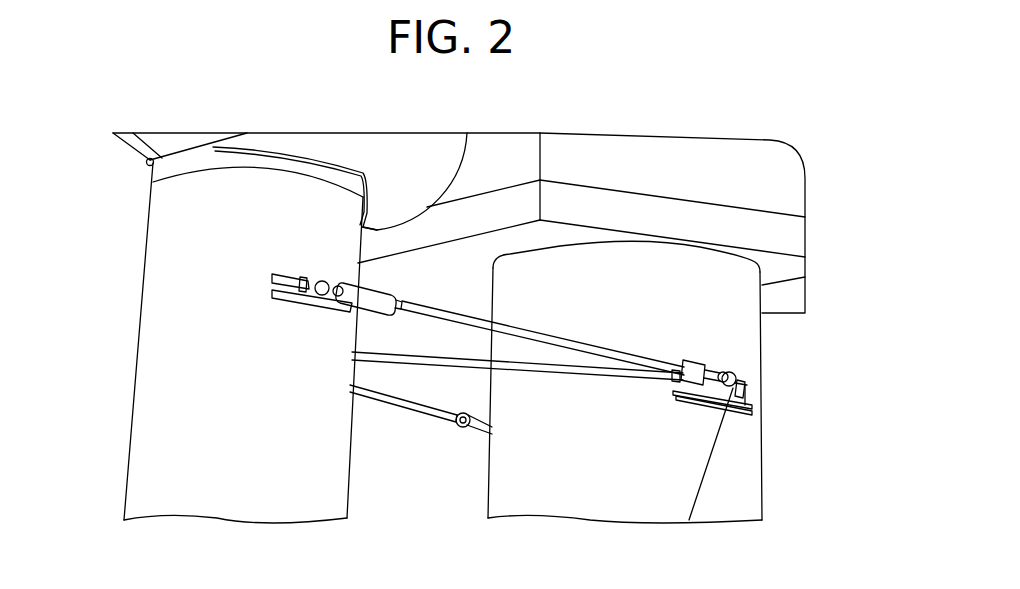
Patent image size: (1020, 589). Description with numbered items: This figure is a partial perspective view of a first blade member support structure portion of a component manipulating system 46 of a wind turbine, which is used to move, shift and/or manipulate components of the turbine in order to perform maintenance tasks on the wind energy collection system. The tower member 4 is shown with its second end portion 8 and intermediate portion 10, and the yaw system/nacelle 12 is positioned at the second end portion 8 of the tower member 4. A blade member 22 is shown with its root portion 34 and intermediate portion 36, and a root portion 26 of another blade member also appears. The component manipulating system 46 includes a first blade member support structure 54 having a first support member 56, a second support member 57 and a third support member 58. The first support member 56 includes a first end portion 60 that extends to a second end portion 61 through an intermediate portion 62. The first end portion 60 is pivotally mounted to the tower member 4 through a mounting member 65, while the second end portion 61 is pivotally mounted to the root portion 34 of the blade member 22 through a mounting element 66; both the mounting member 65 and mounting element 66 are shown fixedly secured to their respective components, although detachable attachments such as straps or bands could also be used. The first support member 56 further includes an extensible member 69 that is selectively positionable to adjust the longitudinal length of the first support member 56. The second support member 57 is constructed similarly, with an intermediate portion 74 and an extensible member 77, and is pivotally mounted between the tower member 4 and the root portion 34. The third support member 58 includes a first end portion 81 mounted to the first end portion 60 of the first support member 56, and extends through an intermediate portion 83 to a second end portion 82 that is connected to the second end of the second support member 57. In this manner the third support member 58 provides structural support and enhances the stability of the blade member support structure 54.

The tower member 4 is at (786, 505).
The second end portion 8 is at (722, 272).
The intermediate portion 10 is at (595, 508).
The yaw system/nacelle 12 is at (750, 162).
The blade member 22 is at (112, 318).
The root portion 26 is at (397, 152).
The root portion 34 is at (173, 200).
The intermediate portion 36 is at (225, 500).
The component manipulating system 46 is at (415, 492).
The first blade member support structure 54 is at (553, 400).
The first support member 56 is at (563, 329).
The second support member 57 is at (386, 416).
The third support member 58 is at (468, 382).
The first end portion 60 is at (742, 372).
The second end portion 61 is at (322, 272).
The intermediate portion 62 is at (596, 349).
The mounting member 65 is at (743, 403).
The mounting element 66 is at (302, 303).
The extensible member 69 is at (388, 288).
The intermediate portion 74 is at (388, 400).
The extensible member 77 is at (478, 430).
The first end portion 81 is at (664, 382).
The second end portion 82 is at (356, 358).
The intermediate portion 83 is at (503, 362).